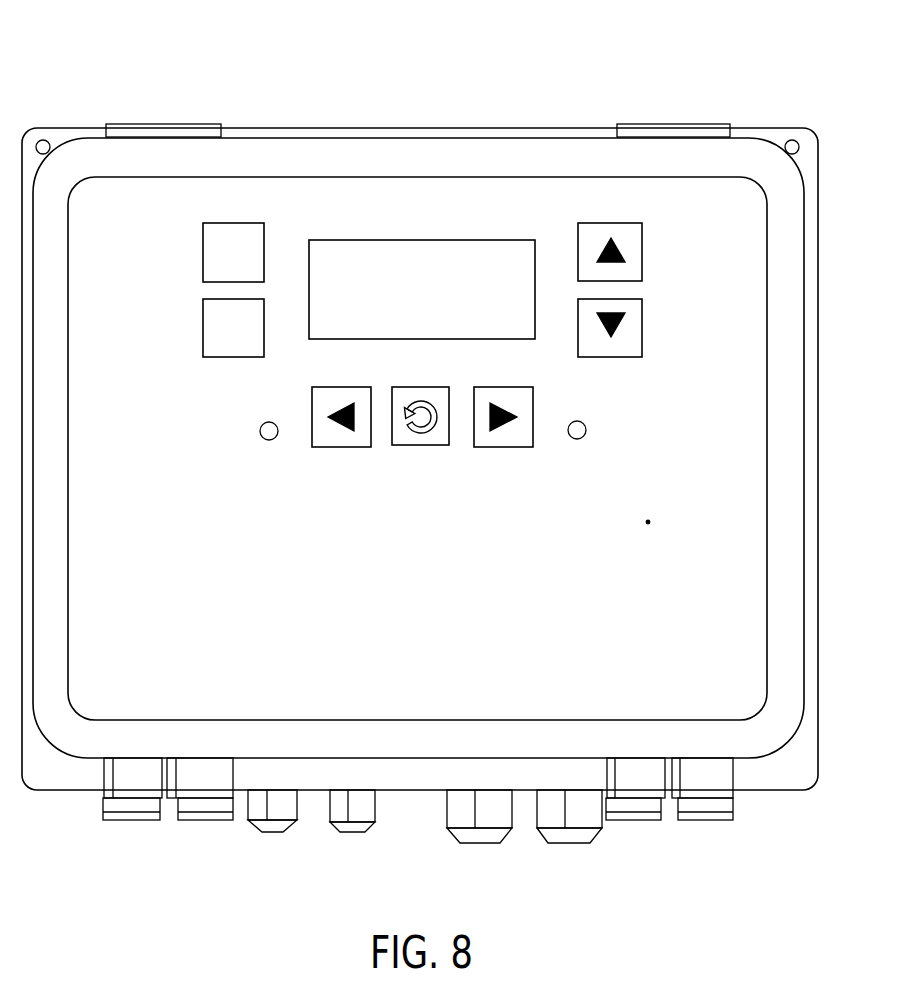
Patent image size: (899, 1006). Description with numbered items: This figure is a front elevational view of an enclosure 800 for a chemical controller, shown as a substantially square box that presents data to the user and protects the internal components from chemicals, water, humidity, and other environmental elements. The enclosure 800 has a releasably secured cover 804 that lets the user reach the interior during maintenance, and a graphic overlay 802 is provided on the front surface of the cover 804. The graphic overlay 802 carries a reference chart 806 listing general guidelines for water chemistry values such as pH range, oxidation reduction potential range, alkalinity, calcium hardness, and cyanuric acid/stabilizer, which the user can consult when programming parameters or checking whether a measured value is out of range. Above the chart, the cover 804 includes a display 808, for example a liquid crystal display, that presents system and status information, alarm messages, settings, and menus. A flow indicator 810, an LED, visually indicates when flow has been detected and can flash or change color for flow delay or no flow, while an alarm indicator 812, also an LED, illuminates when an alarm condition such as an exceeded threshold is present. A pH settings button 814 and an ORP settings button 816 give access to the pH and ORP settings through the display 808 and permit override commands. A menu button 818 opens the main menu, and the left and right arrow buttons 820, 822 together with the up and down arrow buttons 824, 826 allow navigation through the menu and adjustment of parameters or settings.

The enclosure 800 is at (158, 57).
The graphic overlay 802 is at (767, 203).
The cover 804 is at (765, 723).
The reference chart 806 is at (340, 607).
The display 808 is at (473, 273).
The flow indicator 810 is at (257, 430).
The alarm indicator 812 is at (587, 430).
The pH settings button 814 is at (203, 250).
The ORP settings button 816 is at (203, 325).
The menu button 818 is at (420, 387).
The left arrow button 820 is at (342, 448).
The right arrow button 822 is at (503, 447).
The up arrow button 824 is at (643, 252).
The down arrow button 826 is at (642, 328).